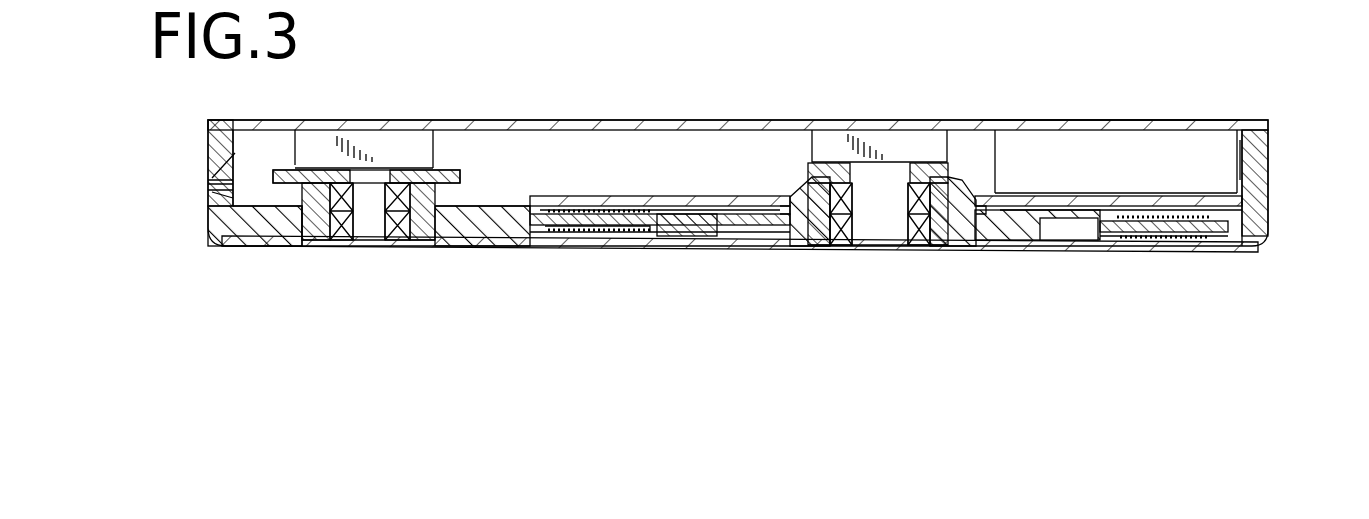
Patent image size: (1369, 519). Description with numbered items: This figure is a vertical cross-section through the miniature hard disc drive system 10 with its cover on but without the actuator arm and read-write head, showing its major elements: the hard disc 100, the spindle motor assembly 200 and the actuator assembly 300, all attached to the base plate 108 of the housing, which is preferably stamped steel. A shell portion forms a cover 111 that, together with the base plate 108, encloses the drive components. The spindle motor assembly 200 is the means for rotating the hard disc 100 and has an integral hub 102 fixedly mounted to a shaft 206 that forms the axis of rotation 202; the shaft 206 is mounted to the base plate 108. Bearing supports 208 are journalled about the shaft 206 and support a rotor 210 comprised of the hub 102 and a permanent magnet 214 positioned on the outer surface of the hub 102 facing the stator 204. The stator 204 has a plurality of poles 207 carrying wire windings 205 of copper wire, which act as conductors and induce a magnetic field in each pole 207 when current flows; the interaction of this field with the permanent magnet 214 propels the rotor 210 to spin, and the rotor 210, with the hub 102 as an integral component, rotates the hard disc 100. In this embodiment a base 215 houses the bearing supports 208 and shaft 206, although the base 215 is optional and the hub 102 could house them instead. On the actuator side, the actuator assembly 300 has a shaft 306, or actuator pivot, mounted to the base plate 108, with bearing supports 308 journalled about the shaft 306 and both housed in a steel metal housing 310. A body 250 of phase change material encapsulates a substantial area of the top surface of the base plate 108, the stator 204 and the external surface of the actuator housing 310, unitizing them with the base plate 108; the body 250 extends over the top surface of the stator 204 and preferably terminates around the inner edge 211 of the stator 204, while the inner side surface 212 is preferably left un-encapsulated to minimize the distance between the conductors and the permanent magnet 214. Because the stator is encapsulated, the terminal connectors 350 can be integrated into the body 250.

The miniature hard disc drive system 10 is at (755, 270).
The hard disc 100 is at (1270, 197).
The integral hub 102 is at (823, 126).
The base plate 108 is at (262, 238).
The cover 111 is at (984, 120).
The spindle motor assembly 200 is at (876, 152).
The axis of rotation 202 is at (889, 248).
The stator 204 is at (541, 226).
The wire windings 205 is at (601, 238).
The shaft 206 is at (892, 222).
The poles 207 is at (648, 224).
The bearing supports 208 is at (838, 236).
The rotor 210 is at (932, 172).
The inner edge of stator 211 is at (656, 218).
The inner side surface of stator 212 is at (688, 205).
The permanent magnet 214 is at (688, 228).
The base 215 is at (973, 228).
The body 250 is at (486, 218).
The actuator assembly 300 is at (377, 182).
The shaft 306 is at (373, 232).
The bearing supports 308 is at (338, 246).
The metal housing 310 is at (424, 244).
The terminal connectors 350 is at (212, 180).